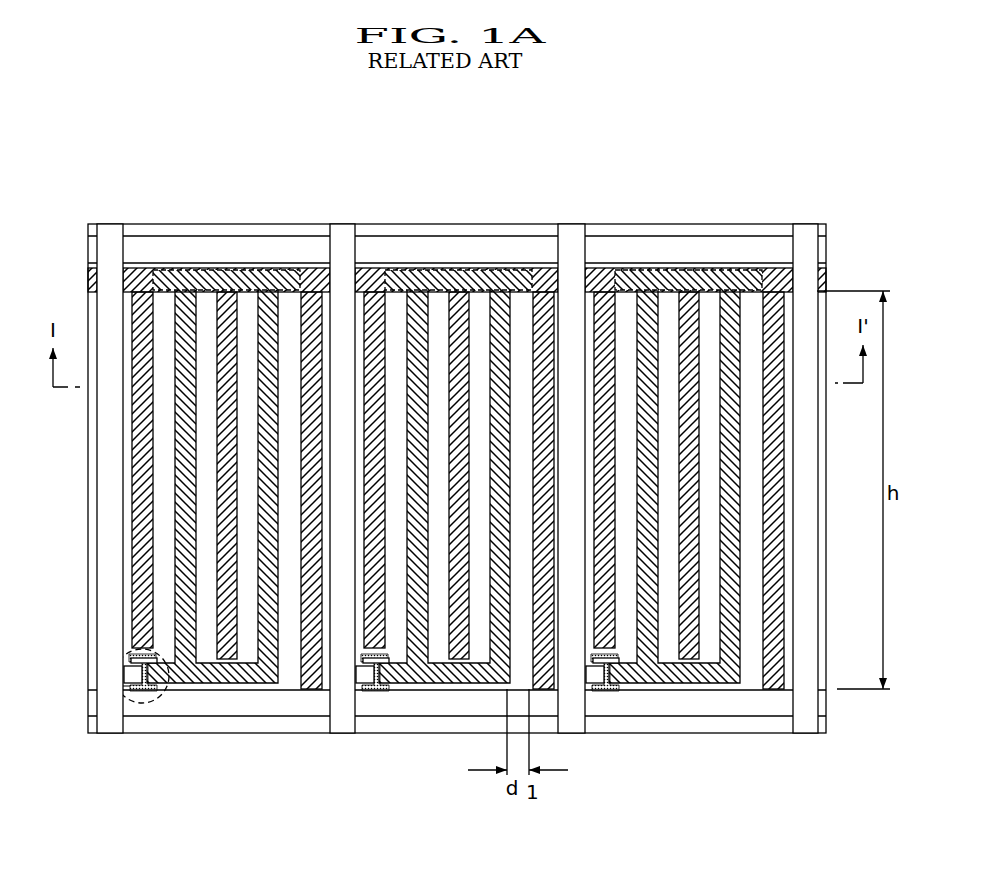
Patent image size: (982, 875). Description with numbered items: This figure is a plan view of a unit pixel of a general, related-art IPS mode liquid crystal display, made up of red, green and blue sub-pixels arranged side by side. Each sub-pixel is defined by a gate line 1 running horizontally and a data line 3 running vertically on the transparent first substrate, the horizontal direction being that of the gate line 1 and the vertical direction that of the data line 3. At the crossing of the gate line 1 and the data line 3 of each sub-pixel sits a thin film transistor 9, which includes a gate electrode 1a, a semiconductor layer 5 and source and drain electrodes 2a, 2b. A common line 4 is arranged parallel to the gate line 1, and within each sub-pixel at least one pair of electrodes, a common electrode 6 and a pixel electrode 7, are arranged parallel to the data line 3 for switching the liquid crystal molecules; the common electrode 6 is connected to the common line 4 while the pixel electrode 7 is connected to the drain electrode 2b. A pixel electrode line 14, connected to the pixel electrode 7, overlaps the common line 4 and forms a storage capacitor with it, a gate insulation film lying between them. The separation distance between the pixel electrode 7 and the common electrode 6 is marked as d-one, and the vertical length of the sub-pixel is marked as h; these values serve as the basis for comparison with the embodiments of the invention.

The gate line 1 is at (263, 708).
The gate electrode 1a is at (132, 656).
The source electrode 2a is at (128, 674).
The drain electrode 2b is at (153, 688).
The data line 3 is at (112, 727).
The common line 4 is at (93, 286).
The semiconductor layer 5 is at (145, 698).
The common electrode 6 is at (223, 297).
The pixel electrode 7 is at (182, 297).
The thin film transistor 9 is at (117, 697).
The pixel electrode line 14 is at (290, 276).